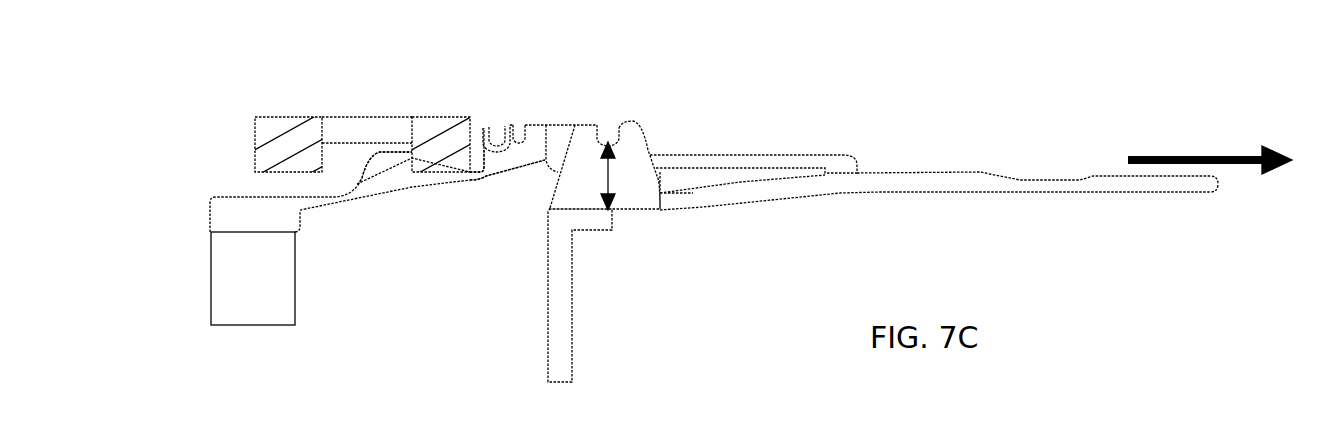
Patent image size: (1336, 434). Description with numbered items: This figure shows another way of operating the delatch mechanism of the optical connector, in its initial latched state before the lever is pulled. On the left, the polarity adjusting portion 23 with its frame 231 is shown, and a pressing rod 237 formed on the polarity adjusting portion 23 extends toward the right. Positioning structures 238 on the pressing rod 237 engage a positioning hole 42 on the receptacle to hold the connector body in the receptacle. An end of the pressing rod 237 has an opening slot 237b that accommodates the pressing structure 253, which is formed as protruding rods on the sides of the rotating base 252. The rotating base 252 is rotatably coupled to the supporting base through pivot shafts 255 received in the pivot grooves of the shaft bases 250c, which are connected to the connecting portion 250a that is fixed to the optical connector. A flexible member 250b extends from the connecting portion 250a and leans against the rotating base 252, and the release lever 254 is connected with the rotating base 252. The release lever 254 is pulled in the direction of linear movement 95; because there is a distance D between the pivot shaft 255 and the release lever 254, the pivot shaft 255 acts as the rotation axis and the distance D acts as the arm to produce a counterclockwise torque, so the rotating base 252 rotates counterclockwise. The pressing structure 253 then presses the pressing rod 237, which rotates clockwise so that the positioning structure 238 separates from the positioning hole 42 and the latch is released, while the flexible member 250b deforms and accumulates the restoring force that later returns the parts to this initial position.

The polarity adjusting portion 23 is at (198, 216).
The frame 231 is at (240, 283).
The positioning hole 42 is at (357, 130).
The positioning structure 238 is at (400, 162).
The pressing rod 237 is at (493, 170).
The opening slot 237b is at (517, 138).
The pressing structure 253 is at (496, 137).
The rotating base 252 is at (555, 130).
The pivot shaft 255 is at (611, 130).
The shaft base 250c is at (630, 153).
The connecting portion 250a is at (565, 293).
The flexible member 250b is at (763, 158).
The release lever 254 is at (1090, 177).
The linear movement 95 is at (1279, 154).
The distance D is at (613, 180).